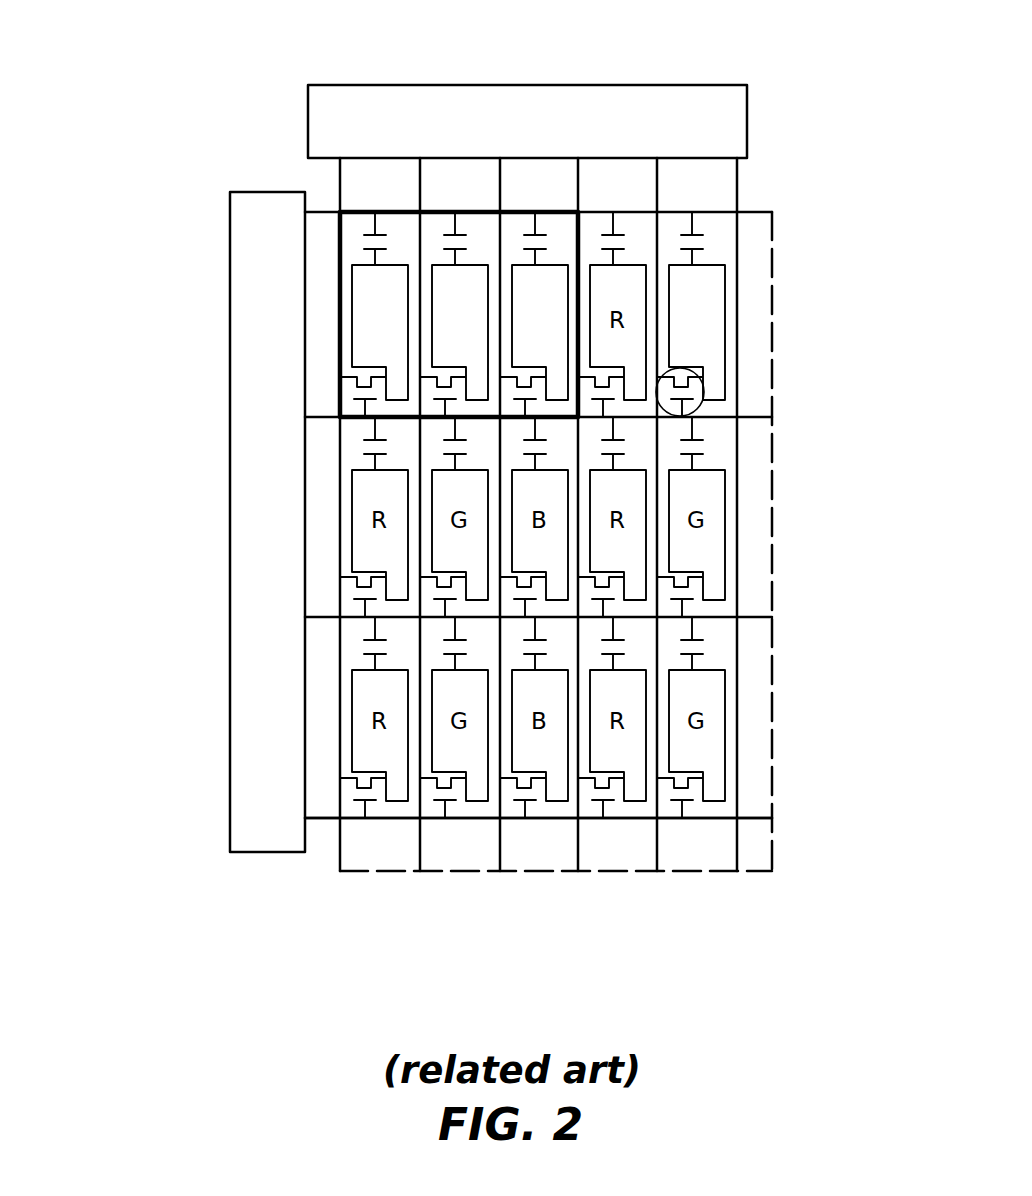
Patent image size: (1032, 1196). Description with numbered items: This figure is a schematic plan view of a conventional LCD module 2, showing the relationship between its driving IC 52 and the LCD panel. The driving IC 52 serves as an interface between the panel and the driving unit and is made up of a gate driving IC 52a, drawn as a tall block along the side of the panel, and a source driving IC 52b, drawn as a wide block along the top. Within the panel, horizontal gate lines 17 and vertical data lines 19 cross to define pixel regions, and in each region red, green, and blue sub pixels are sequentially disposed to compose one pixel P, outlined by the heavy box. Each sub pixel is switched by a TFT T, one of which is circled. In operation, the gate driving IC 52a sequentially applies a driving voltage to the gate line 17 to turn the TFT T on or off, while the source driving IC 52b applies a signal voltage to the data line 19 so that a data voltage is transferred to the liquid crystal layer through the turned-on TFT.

The LCD module 2 is at (822, 157).
The driving IC 52 is at (92, 130).
The gate driving IC 52a is at (240, 222).
The source driving IC 52b is at (320, 125).
The pixel P is at (478, 211).
The TFT T is at (703, 390).
The gate line 17 is at (392, 818).
The data line 19 is at (739, 782).